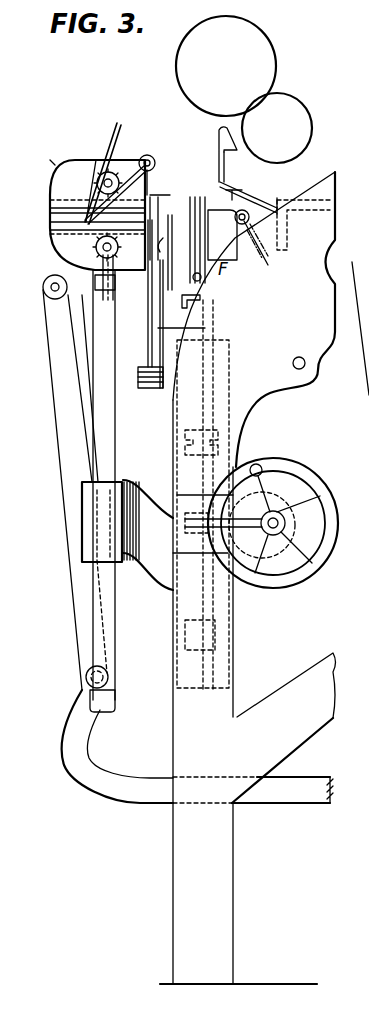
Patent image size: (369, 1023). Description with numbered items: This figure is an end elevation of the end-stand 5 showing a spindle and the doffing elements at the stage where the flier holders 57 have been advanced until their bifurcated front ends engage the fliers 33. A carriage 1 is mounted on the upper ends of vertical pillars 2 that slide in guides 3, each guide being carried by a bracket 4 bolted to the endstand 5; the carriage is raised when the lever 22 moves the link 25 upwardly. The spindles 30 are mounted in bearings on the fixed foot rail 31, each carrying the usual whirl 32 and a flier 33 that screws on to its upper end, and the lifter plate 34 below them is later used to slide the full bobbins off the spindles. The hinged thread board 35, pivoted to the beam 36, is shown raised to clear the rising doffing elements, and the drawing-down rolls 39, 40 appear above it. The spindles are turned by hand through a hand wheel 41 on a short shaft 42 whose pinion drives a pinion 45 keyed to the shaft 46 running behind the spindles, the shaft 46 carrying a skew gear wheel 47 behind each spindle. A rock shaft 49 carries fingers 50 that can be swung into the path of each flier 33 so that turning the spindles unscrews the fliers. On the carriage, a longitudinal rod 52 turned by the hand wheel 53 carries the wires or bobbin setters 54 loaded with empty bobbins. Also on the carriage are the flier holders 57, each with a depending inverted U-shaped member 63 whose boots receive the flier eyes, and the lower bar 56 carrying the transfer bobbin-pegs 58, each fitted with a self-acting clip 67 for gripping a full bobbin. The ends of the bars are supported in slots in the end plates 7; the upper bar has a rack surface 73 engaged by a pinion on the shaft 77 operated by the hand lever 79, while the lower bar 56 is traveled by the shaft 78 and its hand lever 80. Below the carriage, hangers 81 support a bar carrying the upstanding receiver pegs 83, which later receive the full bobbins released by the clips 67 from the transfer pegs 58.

The carriage 1 is at (50, 160).
The vertical pillars 2 is at (100, 491).
The guides 3 is at (110, 522).
The bracket 4 is at (178, 535).
The endstand 5 is at (248, 578).
The end plates 7 is at (50, 266).
The lever 22 is at (62, 748).
The link 25 is at (48, 327).
The spindles 30 is at (214, 495).
The foot rail 31 is at (203, 514).
The whirl 32 is at (182, 435).
The flier 33 is at (222, 235).
The lifter plate 34 is at (206, 298).
The thread board 35 is at (230, 165).
The beam 36 is at (272, 205).
The drawing-down roll 39 is at (277, 128).
The drawing-down roll 40 is at (226, 66).
The hand wheel 41 is at (298, 466).
The short shaft 42 is at (273, 510).
The pinion 45 is at (259, 586).
The shaft 46 is at (262, 532).
The skew gear wheel 47 is at (224, 480).
The rock shaft 49 is at (259, 246).
The fingers 50 is at (230, 197).
The longitudinal rod or shaft 52 is at (151, 157).
The hand wheel 53 is at (153, 168).
The wires or bobbin setters 54 is at (117, 123).
The lower bar 56 is at (50, 206).
The flier holders 57 is at (216, 130).
The transfer bobbin-pegs 58 is at (158, 258).
The inverted U-shaped member 63 is at (165, 198).
The self-acting clip 67 is at (171, 240).
The rack surface 73 is at (166, 228).
The shaft 77 is at (146, 159).
The shaft 78 is at (75, 243).
The hand lever 79 is at (96, 160).
The hand lever 80 is at (113, 292).
The hangers 81 is at (191, 328).
The receiver pegs 83 is at (148, 335).